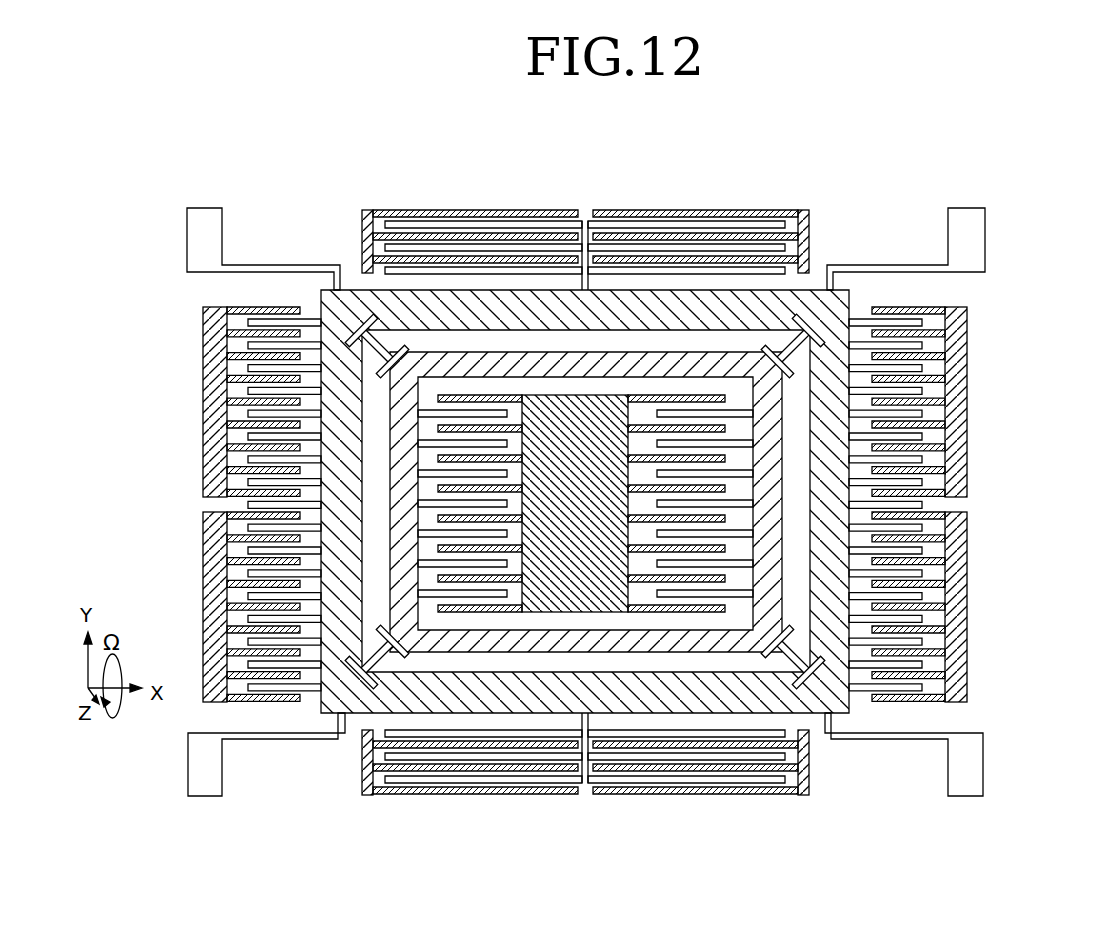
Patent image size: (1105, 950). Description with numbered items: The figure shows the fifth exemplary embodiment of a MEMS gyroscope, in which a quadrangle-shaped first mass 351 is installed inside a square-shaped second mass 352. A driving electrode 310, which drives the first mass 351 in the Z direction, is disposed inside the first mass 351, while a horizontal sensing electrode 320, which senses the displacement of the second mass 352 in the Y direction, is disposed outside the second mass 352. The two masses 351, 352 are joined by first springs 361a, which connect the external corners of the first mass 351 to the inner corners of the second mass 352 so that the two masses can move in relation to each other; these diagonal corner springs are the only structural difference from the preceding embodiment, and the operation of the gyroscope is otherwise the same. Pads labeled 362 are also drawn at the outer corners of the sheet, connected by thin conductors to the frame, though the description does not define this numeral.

The driving electrode 310 is at (613, 493).
The horizontal sensing electrode 320 is at (420, 228).
The first mass 351 is at (641, 367).
The second mass 352 is at (765, 303).
The first springs 361a is at (805, 328).
The electrode pad 362 is at (895, 270).